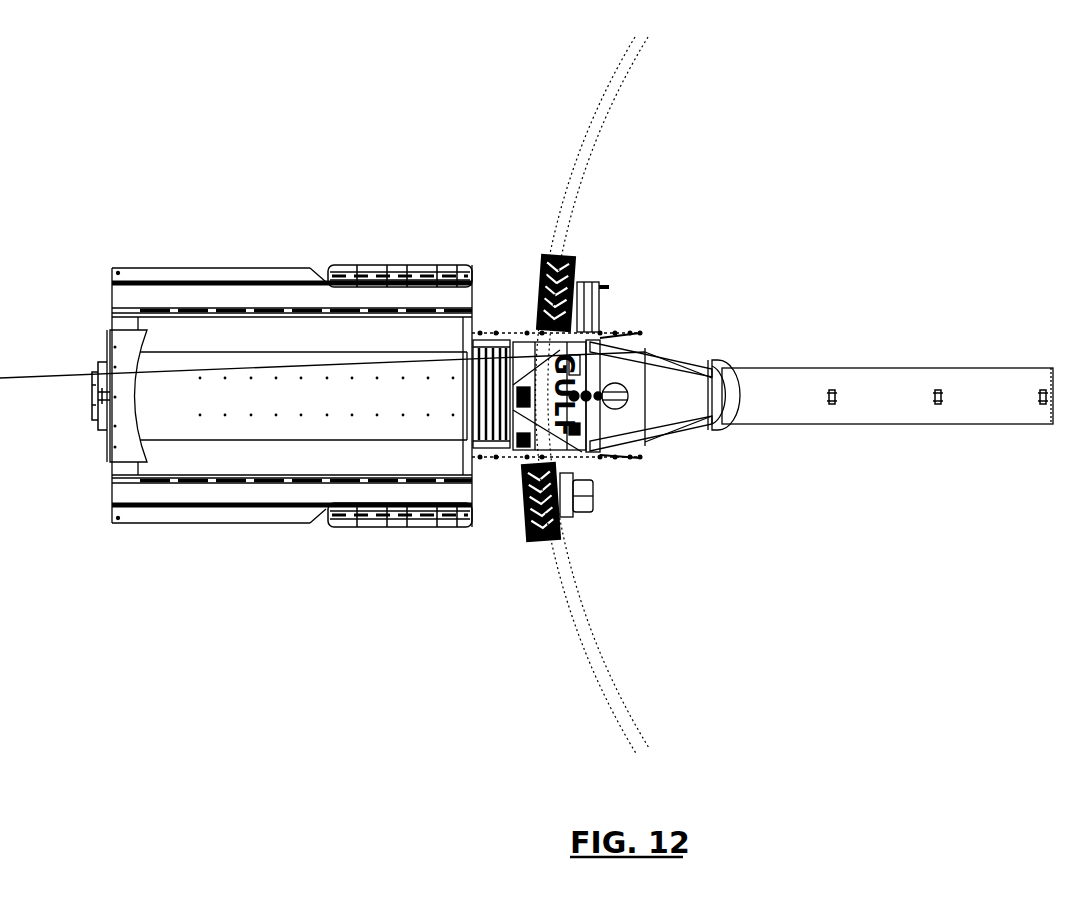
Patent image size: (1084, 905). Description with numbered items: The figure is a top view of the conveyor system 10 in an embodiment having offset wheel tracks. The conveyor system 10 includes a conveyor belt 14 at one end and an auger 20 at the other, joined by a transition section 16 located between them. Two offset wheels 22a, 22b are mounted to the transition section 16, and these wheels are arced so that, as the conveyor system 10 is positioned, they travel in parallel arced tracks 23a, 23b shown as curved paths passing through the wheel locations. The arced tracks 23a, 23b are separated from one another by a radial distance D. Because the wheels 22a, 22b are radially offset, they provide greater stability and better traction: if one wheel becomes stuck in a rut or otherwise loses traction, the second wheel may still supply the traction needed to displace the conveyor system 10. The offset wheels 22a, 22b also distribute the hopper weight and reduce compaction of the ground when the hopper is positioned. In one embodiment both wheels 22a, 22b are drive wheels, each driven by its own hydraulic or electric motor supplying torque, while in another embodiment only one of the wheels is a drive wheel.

The conveyor system 10 is at (247, 107).
The conveyor belt 14 is at (218, 372).
The transition section 16 is at (655, 385).
The auger 20 is at (915, 368).
The offset wheel 22a is at (525, 530).
The offset wheel 22b is at (585, 262).
The arced track 23a is at (614, 73).
The arced track 23b is at (628, 86).
The radial distance D is at (588, 218).